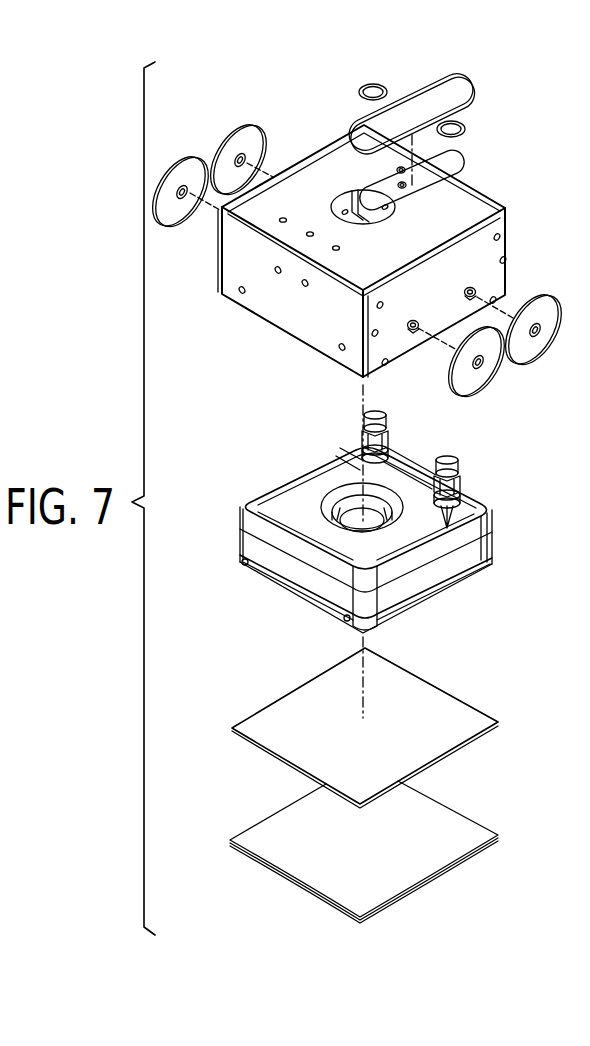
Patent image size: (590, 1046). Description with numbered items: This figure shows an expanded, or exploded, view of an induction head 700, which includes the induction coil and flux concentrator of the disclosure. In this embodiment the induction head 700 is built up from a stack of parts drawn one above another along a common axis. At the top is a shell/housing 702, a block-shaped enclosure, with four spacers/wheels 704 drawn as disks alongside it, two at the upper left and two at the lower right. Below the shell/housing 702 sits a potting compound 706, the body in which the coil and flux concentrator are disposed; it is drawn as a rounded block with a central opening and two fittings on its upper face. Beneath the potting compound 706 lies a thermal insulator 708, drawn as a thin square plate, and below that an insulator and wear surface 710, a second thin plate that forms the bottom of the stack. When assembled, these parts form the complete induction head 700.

The induction head 700 is at (536, 816).
The shell/housing 702 is at (488, 191).
The spacers/wheels 704 is at (238, 124).
The potting compound 706 is at (495, 535).
The thermal insulator 708 is at (440, 700).
The insulator and wear surface 710 is at (436, 820).